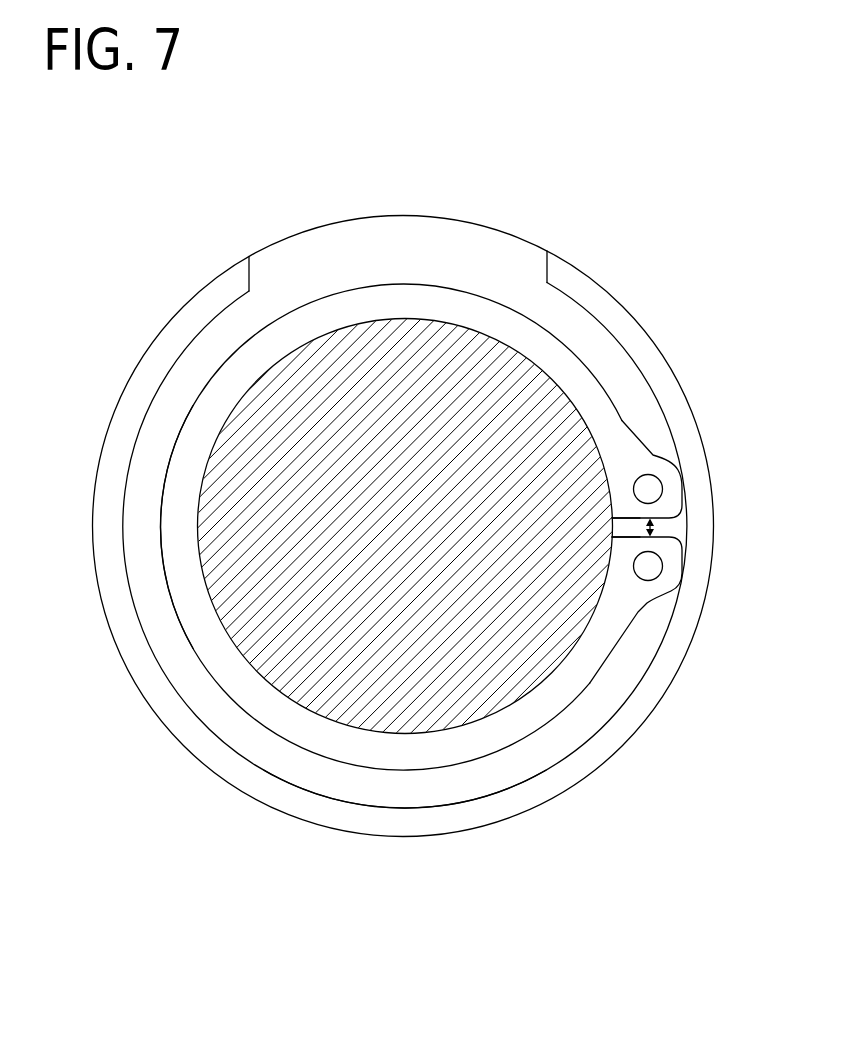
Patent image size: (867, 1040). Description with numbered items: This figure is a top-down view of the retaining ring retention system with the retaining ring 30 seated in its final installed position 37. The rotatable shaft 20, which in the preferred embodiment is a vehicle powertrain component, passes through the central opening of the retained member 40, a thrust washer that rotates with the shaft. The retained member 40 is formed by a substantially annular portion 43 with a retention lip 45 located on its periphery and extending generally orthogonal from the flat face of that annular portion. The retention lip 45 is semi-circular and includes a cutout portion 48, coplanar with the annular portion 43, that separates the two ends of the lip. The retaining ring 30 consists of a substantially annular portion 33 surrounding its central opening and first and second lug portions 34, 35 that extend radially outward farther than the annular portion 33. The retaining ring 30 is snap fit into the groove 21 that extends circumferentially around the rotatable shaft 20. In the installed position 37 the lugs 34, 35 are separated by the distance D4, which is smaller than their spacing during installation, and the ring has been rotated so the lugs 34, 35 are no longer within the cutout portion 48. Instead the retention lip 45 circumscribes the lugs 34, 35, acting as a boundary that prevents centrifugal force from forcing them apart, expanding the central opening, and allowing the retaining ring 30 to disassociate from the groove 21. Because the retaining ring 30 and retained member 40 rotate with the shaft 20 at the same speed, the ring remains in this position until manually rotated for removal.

The rotatable shaft 20 is at (532, 680).
The groove 21 is at (250, 660).
The retaining ring 30 is at (582, 368).
The substantially annular portion 33 is at (207, 415).
The first lug portion 34 is at (668, 492).
The second lug portion 35 is at (668, 580).
The installed position 37 is at (648, 440).
The retained member 40 is at (662, 698).
The substantially annular portion 43 is at (138, 506).
The retention lip 45 is at (360, 823).
The cutout portion 48 is at (407, 248).
The distance between lugs in installed position D4 is at (656, 527).